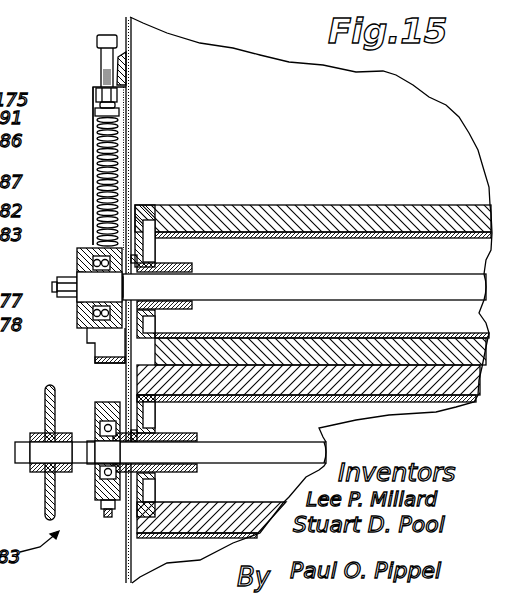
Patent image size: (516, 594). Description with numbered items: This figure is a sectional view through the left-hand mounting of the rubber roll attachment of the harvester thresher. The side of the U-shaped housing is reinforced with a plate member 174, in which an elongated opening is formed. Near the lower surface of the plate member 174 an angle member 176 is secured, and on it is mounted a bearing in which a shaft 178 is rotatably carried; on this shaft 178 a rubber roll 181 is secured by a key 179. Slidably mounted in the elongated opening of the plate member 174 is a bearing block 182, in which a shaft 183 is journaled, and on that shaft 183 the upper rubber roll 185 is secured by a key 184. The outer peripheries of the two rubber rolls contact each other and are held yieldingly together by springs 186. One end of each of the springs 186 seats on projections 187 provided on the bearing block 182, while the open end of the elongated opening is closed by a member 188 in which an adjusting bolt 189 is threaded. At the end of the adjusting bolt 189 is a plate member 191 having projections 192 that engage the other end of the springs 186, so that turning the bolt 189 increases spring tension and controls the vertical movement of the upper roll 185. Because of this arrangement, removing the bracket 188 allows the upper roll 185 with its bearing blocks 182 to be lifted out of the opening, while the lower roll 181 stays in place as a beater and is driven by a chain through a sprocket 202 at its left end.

The plate member 174 is at (127, 118).
The angle member 176 is at (113, 517).
The shaft 178 is at (217, 454).
The key 179 is at (187, 438).
The rubber roll 181 is at (277, 399).
The bearing block 182 is at (88, 339).
The shaft 183 is at (334, 263).
The key 184 is at (192, 270).
The rubber roll 185 is at (311, 183).
The springs 186 is at (98, 153).
The projections 187 is at (100, 235).
The member 188 is at (118, 58).
The adjusting bolt 189 is at (107, 55).
The plate member 191 is at (97, 113).
The projections 192 is at (98, 124).
The sprocket 202 is at (47, 398).